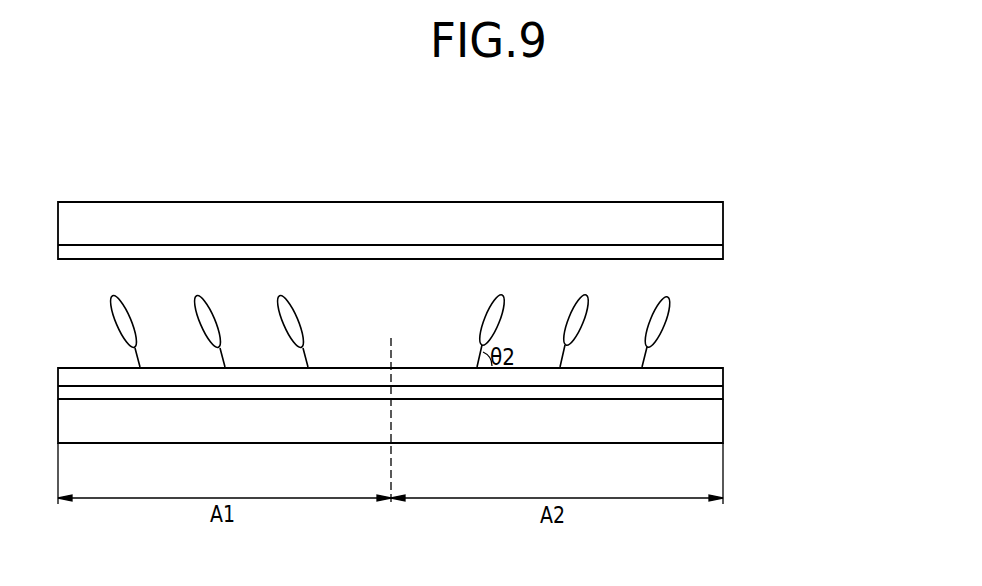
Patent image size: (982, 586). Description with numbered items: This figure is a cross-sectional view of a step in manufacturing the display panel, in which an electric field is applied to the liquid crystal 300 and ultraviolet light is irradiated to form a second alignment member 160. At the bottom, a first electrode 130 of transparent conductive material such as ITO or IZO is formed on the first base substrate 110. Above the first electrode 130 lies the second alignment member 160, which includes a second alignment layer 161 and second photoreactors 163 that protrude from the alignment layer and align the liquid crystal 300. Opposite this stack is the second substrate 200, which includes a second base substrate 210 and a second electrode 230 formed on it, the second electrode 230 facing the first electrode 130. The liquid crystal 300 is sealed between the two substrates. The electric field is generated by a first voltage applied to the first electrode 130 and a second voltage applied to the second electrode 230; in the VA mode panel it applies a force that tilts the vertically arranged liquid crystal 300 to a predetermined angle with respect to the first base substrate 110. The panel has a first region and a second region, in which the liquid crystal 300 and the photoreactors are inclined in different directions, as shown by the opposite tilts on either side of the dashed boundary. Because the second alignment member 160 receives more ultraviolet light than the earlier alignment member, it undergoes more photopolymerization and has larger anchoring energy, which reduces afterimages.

The first base substrate 110 is at (715, 418).
The first electrode 130 is at (715, 391).
The second alignment member 160 is at (459, 350).
The second alignment layer 161 is at (715, 380).
The second photoreactor 163 is at (645, 358).
The second substrate 200 is at (459, 232).
The second base substrate 210 is at (715, 215).
The second electrode 230 is at (715, 252).
The liquid crystal 300 is at (666, 308).